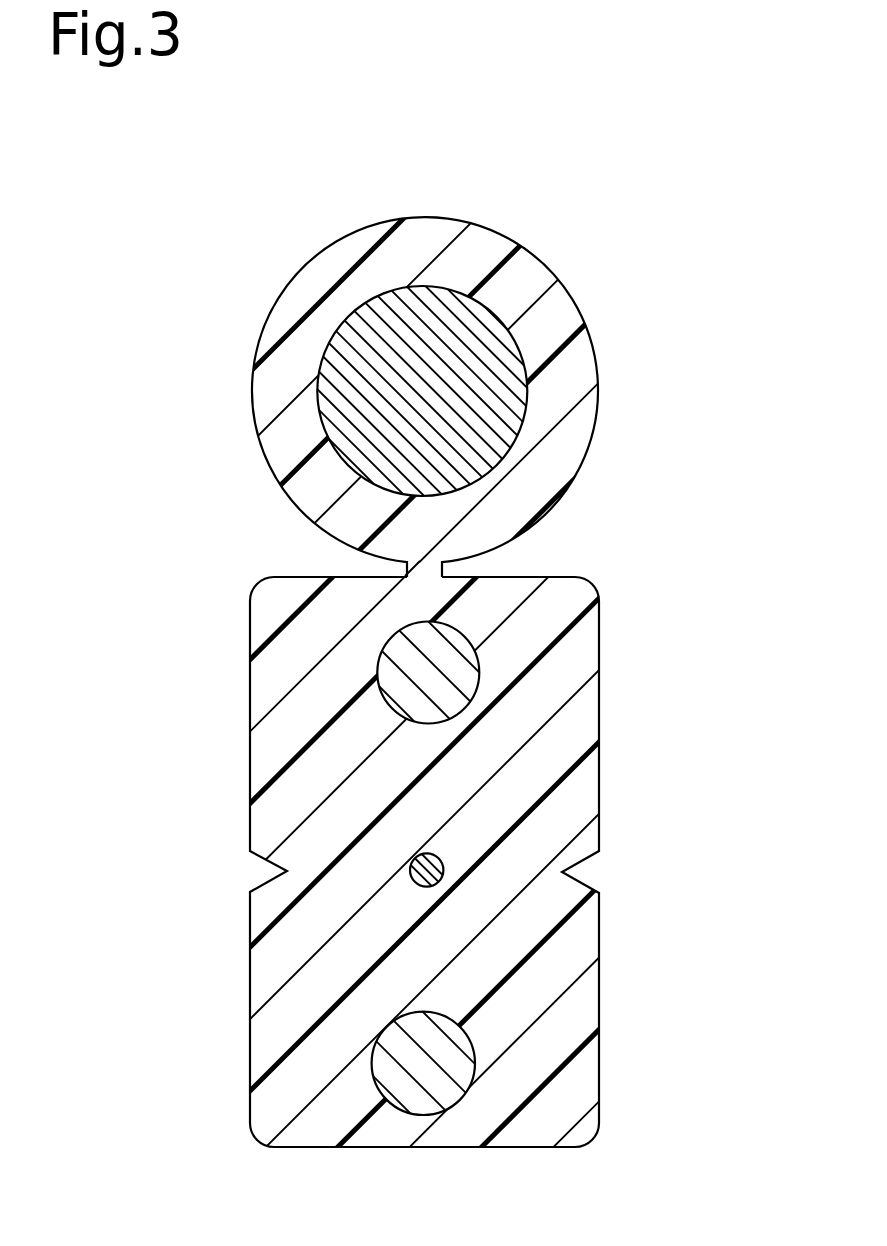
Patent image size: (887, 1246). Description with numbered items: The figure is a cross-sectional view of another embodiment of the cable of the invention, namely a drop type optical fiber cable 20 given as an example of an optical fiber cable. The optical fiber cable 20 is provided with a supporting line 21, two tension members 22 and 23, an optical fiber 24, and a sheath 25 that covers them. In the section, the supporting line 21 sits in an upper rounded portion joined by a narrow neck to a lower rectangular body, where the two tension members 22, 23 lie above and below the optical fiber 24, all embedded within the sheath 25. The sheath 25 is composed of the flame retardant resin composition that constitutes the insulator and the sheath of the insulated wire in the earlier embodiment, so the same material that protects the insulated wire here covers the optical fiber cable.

The optical fiber cable 20 is at (494, 150).
The supporting line 21 is at (429, 383).
The tension member 22 is at (455, 663).
The tension member 23 is at (457, 1057).
The optical fiber 24 is at (438, 865).
The sheath 25 is at (568, 741).